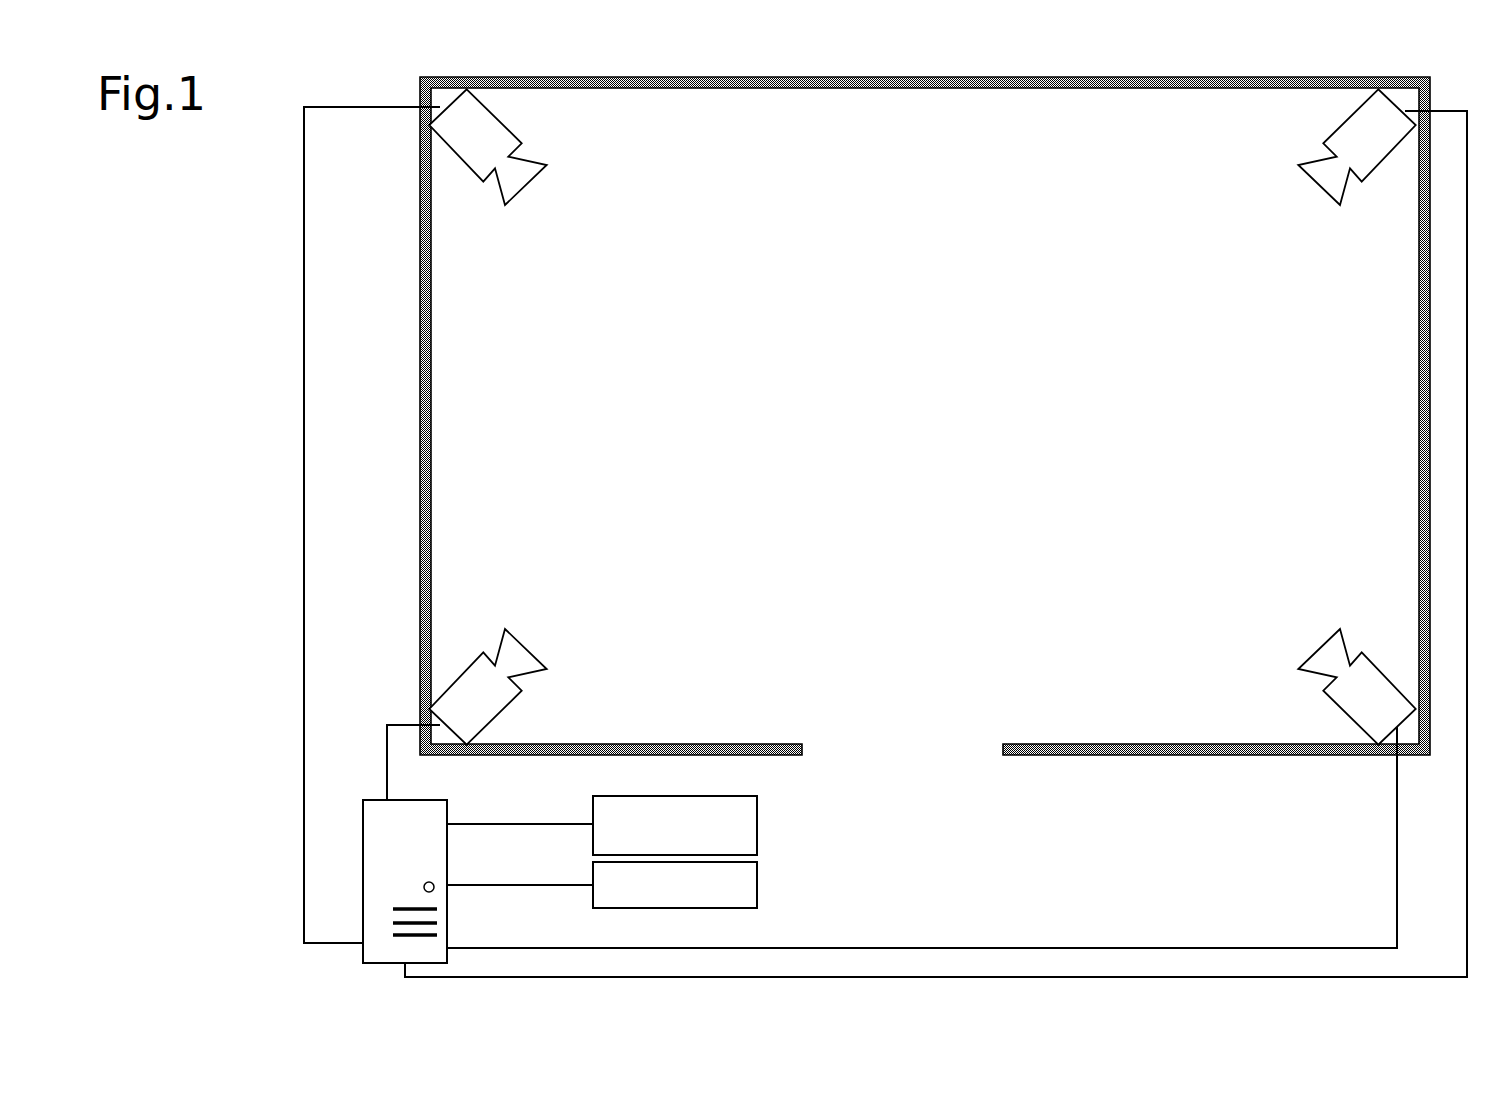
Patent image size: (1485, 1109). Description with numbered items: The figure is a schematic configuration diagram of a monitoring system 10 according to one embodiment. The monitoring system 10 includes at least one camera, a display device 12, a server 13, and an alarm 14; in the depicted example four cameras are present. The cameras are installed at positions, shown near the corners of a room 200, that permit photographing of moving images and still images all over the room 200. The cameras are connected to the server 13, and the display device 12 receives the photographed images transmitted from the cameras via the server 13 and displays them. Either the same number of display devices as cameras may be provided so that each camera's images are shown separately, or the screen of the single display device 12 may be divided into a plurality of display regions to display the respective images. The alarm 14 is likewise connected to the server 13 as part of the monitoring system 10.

The monitoring system 10 is at (279, 192).
The display device 12 is at (758, 825).
The server 13 is at (448, 912).
The alarm 14 is at (758, 885).
The room 200 is at (419, 312).